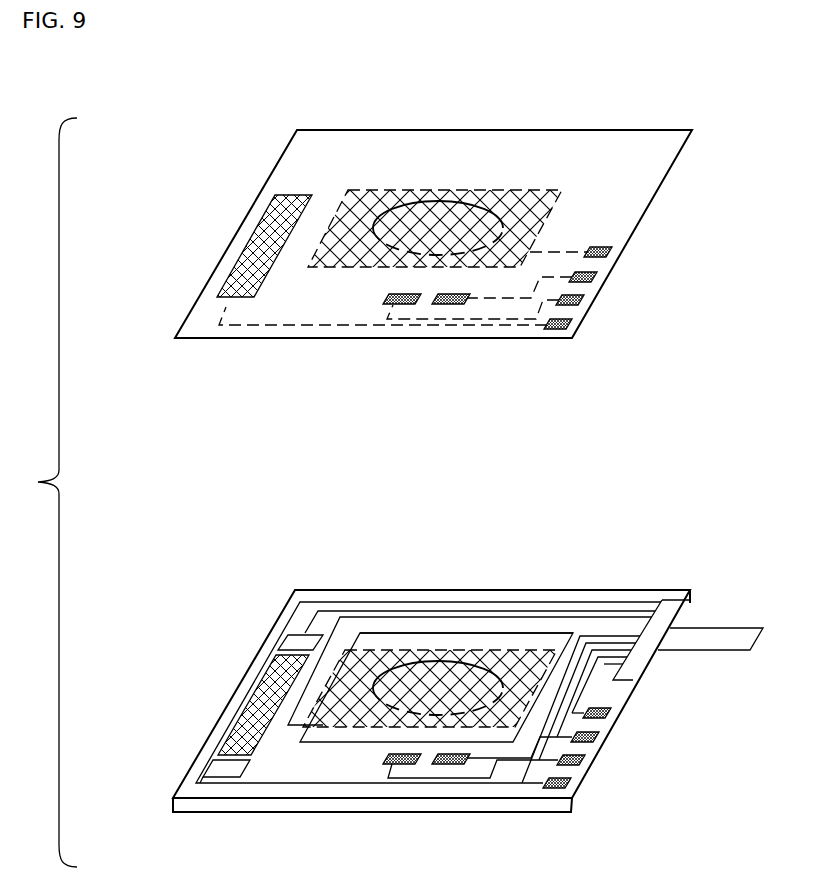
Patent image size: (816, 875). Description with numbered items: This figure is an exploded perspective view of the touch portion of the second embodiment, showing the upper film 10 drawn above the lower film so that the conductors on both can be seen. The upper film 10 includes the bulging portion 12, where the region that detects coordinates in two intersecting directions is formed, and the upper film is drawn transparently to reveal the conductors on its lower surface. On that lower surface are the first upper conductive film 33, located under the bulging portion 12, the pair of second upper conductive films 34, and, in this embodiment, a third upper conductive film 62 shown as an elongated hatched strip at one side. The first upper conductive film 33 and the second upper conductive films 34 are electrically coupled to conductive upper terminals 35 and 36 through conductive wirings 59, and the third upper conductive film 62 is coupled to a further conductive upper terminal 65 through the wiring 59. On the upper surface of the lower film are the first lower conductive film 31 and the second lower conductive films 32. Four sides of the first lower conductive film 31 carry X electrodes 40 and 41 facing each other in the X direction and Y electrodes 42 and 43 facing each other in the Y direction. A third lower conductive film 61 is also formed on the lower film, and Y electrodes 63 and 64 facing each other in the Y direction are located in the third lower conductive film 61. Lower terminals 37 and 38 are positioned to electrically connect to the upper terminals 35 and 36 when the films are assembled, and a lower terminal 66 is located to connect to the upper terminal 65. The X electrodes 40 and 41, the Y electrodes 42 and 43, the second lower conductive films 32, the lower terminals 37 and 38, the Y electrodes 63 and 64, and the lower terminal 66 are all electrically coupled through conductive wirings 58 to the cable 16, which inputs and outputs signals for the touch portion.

The upper film 10 is at (628, 137).
The bulging portion 12 is at (453, 188).
The first upper conductive film 33 is at (507, 198).
The third upper conductive film 62 is at (257, 237).
The wiring 59 is at (562, 244).
The upper terminal 35 is at (610, 252).
The upper terminal 36 is at (597, 277).
The upper terminal 65 is at (570, 325).
The second upper conductive film 34 is at (390, 305).
The cable 16 is at (703, 628).
The first lower conductive film 31 is at (518, 647).
The Y electrode 43 is at (343, 733).
The Y electrode 42 is at (553, 640).
The X electrode 40 is at (305, 717).
The X electrode 41 is at (588, 633).
The Y electrode 64 is at (297, 643).
The third lower conductive film 61 is at (250, 715).
The Y electrode 63 is at (220, 768).
The lower terminal 66 is at (568, 783).
The lower terminal 37 is at (608, 713).
The lower terminal 38 is at (596, 737).
The second lower conductive film 32 is at (396, 765).
The wiring 58 is at (490, 778).